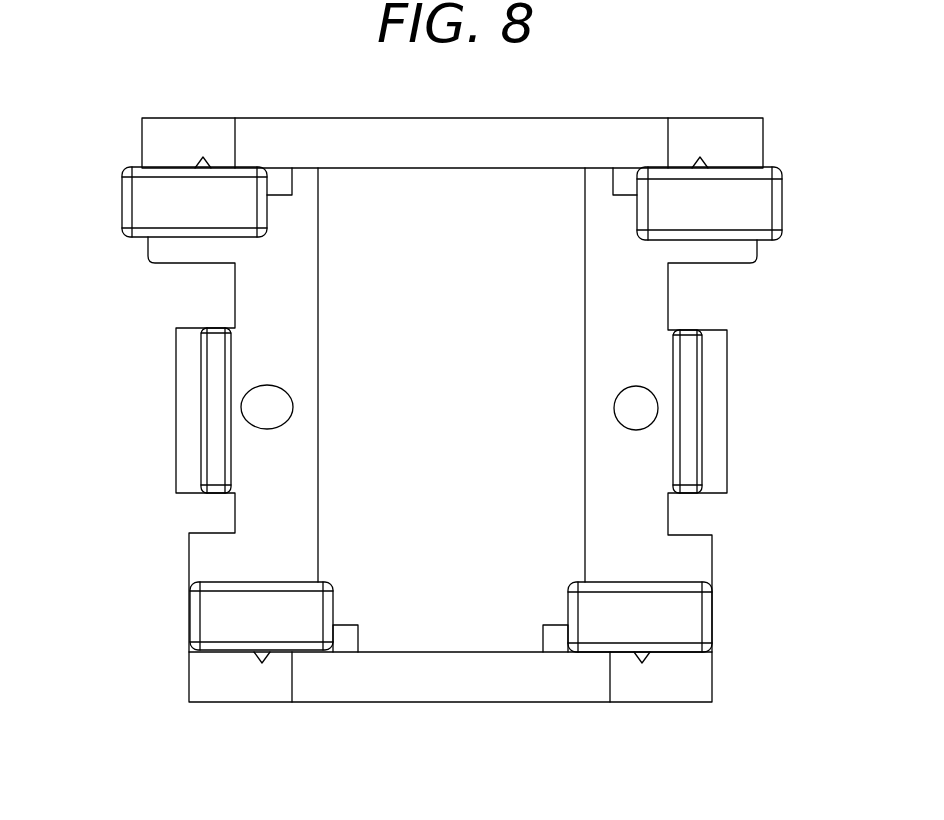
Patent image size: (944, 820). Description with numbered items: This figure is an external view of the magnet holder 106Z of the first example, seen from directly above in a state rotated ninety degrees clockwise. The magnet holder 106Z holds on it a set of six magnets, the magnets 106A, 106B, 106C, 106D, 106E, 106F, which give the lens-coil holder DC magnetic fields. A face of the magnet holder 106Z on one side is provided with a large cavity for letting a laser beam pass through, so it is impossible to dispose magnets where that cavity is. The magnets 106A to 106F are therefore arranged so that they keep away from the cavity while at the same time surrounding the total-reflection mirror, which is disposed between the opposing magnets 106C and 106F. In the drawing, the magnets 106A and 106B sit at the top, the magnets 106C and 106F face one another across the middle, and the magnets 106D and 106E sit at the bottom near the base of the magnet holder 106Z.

The magnet 106A is at (735, 207).
The magnet 106B is at (167, 204).
The magnet 106C is at (215, 418).
The magnet 106D is at (232, 617).
The magnet 106E is at (668, 618).
The magnet 106F is at (687, 420).
The magnet holder 106Z is at (457, 682).